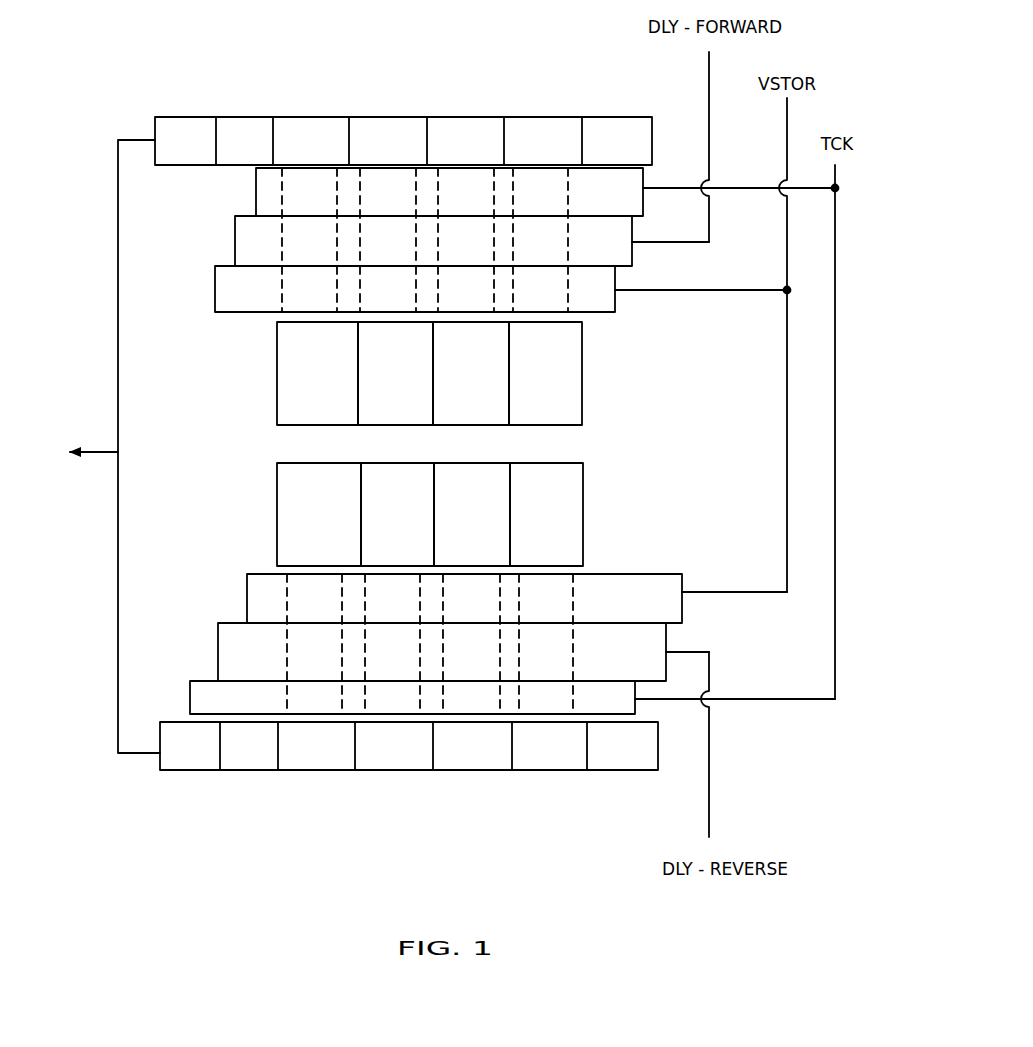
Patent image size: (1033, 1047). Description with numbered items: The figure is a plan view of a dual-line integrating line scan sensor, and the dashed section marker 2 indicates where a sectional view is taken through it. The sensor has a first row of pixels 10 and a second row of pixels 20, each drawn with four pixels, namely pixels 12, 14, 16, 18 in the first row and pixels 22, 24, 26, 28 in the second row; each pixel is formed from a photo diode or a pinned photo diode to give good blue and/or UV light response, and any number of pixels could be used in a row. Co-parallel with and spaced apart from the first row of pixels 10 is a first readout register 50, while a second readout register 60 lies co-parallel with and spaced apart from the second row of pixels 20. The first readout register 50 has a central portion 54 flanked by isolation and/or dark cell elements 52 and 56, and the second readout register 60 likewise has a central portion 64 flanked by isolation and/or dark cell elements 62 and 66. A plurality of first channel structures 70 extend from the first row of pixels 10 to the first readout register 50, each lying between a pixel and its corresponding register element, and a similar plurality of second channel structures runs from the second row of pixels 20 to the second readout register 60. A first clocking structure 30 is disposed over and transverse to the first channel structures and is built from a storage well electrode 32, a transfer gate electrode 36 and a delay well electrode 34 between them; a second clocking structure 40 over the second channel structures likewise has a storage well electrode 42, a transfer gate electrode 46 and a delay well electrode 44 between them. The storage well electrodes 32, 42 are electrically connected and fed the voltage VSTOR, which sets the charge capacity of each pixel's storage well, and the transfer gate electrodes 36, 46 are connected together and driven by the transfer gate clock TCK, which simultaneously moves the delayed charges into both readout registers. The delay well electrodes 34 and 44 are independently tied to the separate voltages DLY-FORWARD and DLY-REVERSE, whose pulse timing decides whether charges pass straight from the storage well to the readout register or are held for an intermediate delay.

The section line for FIG. 2 is at (556, 782).
The first row of pixels 10 is at (398, 386).
The pixel 12 is at (285, 422).
The pixel 14 is at (372, 422).
The pixel 16 is at (447, 422).
The pixel 18 is at (522, 422).
The second row of pixels 20 is at (398, 503).
The pixel 22 is at (288, 471).
The pixel 24 is at (369, 471).
The pixel 26 is at (444, 469).
The pixel 28 is at (514, 469).
The first clocking structure 30 is at (490, 254).
The storage well electrode 32 is at (612, 303).
The delay well electrode 34 is at (632, 251).
The transfer gate electrode 36 is at (643, 203).
The second clocking structure 40 is at (480, 649).
The storage well electrode 42 is at (684, 583).
The delay well electrode 44 is at (668, 640).
The transfer gate electrode 46 is at (640, 703).
The first readout register 50 is at (155, 130).
The isolation and/or dark cell element 52 is at (270, 107).
The central portion 54 is at (583, 107).
The isolation and/or dark cell element 56 is at (652, 107).
The second readout register 60 is at (160, 770).
The isolation and/or dark cell element 62 is at (165, 782).
The central portion 64 is at (585, 782).
The isolation and/or dark cell element 66 is at (660, 782).
The first channel structure 70 is at (313, 323).